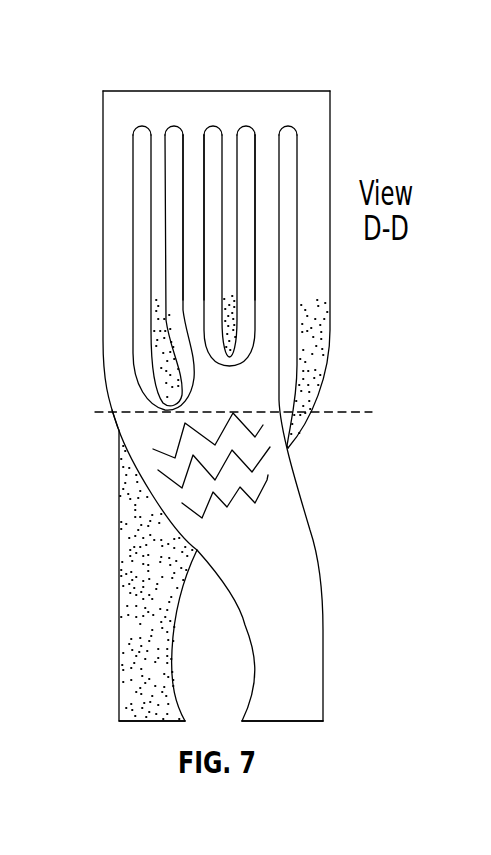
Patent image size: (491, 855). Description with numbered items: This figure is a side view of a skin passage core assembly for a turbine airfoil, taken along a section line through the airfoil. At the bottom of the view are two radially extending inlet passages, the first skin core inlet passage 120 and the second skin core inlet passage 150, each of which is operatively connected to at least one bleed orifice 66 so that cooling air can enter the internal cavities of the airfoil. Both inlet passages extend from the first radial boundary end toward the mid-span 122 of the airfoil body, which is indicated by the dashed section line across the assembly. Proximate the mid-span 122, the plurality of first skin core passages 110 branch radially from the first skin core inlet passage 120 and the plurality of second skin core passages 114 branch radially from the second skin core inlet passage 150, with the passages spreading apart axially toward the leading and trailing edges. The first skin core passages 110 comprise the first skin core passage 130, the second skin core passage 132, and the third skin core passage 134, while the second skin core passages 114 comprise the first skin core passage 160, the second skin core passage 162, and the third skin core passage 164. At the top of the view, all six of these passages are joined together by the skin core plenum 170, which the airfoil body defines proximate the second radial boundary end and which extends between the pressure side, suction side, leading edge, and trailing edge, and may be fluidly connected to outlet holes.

The bleed orifice 66 is at (146, 722).
The first skin core passages 110 is at (306, 437).
The second skin core passages 114 is at (100, 437).
The first skin core inlet passage 120 is at (116, 657).
The mid-span 122 is at (357, 412).
The first skin core passage 130 is at (157, 147).
The second skin core passage 132 is at (228, 142).
The third skin core passage 134 is at (309, 137).
The second skin core inlet passage 150 is at (329, 657).
The first skin core passage 160 is at (119, 167).
The second skin core passage 162 is at (193, 142).
The third skin core passage 164 is at (265, 148).
The skin core plenum 170 is at (209, 88).